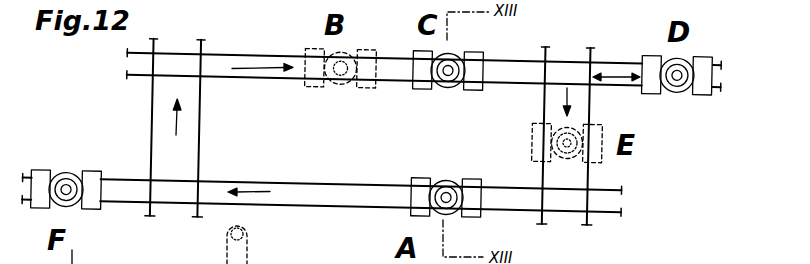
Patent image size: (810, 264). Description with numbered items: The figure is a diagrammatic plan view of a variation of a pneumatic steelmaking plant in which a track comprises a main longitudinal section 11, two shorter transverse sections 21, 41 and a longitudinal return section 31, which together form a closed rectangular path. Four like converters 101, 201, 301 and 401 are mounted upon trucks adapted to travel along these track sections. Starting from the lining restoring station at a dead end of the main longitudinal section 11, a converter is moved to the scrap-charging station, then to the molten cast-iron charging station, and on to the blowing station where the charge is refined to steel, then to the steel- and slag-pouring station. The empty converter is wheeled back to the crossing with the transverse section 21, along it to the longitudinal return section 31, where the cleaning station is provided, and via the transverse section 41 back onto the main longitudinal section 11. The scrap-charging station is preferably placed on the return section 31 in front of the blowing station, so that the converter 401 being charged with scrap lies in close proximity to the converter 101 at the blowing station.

The main longitudinal section 11 is at (424, 85).
The transverse section 21 is at (545, 168).
The longitudinal return section 31 is at (321, 176).
The transverse section 41 is at (200, 150).
The converter 101 is at (450, 88).
The converter 201 is at (660, 91).
The converter 301 is at (88, 192).
The converter 401 is at (457, 158).